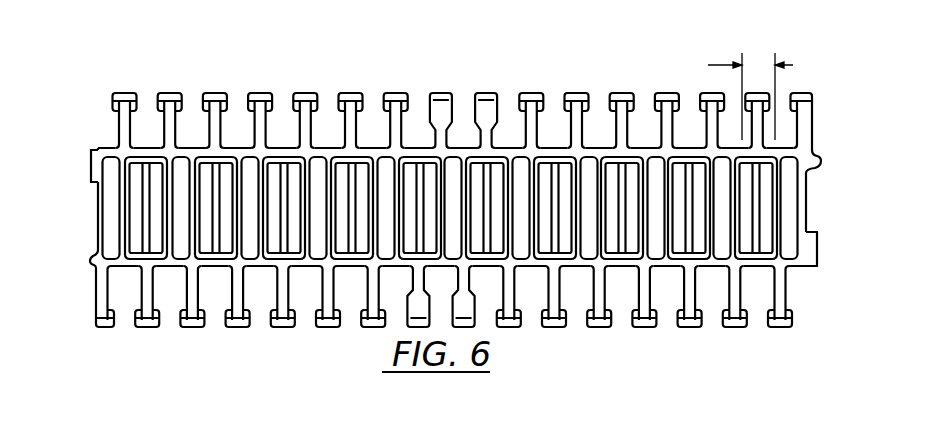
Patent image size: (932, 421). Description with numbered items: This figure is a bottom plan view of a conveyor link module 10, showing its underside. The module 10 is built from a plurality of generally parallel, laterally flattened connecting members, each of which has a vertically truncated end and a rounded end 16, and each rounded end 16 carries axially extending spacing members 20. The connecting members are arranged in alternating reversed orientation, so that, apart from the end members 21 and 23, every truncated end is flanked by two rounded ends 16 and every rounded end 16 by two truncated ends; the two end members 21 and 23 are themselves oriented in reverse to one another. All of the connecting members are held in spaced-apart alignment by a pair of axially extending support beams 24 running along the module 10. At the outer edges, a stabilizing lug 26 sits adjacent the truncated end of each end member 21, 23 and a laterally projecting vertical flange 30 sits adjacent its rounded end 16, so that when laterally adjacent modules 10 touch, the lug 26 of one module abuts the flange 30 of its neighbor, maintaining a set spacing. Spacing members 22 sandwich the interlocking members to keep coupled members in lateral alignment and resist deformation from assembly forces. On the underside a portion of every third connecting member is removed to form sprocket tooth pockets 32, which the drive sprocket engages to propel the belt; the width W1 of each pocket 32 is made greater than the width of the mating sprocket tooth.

The module 10 is at (828, 204).
The rounded end 16 is at (781, 99).
The spacing members 20 is at (627, 95).
The end member 21 is at (808, 181).
The spacing members 22 is at (496, 99).
The end member 23 is at (100, 218).
The support beams 24 is at (193, 147).
The stabilizing lug 26 is at (818, 238).
The vertical flange 30 is at (818, 158).
The sprocket tooth pockets 32 is at (767, 256).
The width of sprocket pocket W1 is at (750, 96).